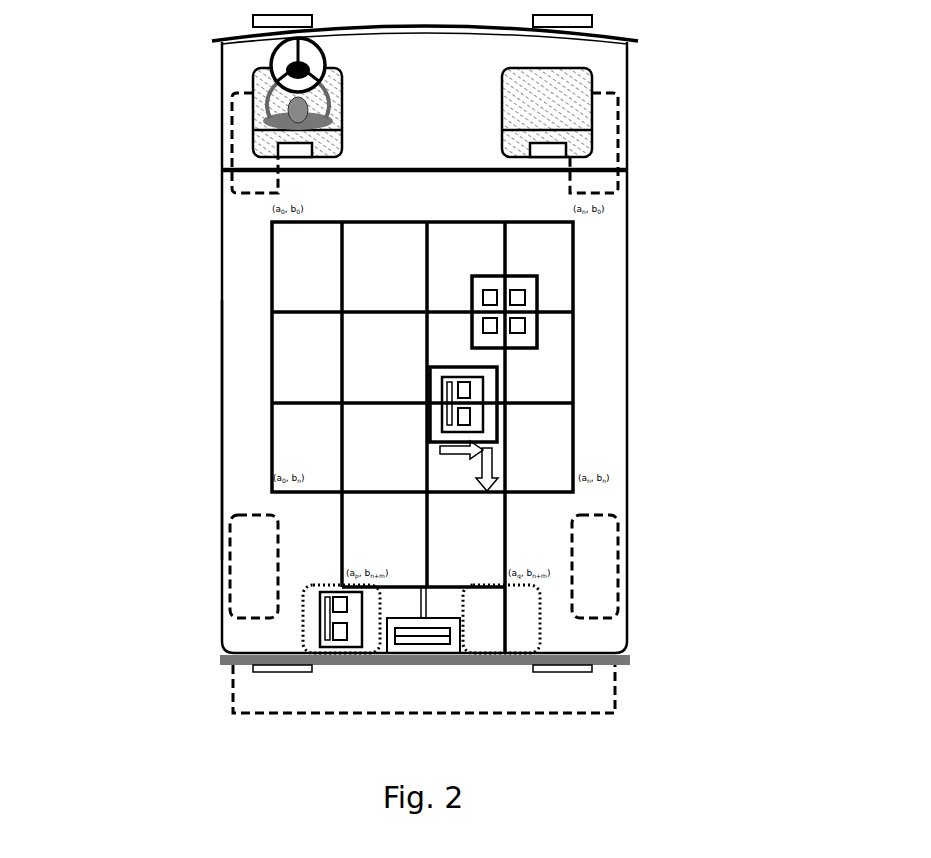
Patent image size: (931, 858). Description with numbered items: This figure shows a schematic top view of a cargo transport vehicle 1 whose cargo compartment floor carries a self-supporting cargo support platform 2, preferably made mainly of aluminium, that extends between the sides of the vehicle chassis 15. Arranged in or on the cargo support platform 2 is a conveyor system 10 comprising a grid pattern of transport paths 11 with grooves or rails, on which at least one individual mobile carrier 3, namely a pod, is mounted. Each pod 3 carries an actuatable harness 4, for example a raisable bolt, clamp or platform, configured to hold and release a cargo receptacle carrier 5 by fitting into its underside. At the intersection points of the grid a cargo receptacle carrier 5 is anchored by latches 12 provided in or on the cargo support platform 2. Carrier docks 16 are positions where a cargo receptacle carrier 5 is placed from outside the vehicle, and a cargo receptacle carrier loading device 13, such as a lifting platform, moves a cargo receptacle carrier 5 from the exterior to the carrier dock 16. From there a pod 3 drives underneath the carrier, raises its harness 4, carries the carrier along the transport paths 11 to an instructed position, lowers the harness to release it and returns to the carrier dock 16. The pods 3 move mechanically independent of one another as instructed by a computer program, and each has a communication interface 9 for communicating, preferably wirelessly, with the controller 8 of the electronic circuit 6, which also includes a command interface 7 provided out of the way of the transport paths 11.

The cargo transport vehicle 1 is at (192, 195).
The cargo support platform 2 is at (237, 327).
The individual mobile carrier (pod) 3 is at (478, 378).
The harness 4 is at (466, 414).
The cargo receptacle carrier 5 is at (537, 276).
The electronic circuit 6 is at (421, 602).
The command interface 7 is at (408, 647).
The controller 8 is at (422, 636).
The interface 9 is at (326, 630).
The conveyor system 10 is at (586, 423).
The transport paths 11 is at (507, 507).
The latches 12 is at (516, 323).
The cargo receptacle carrier loading device 13 is at (613, 687).
The vehicle chassis 15 is at (220, 427).
The carrier docks 16 is at (310, 628).